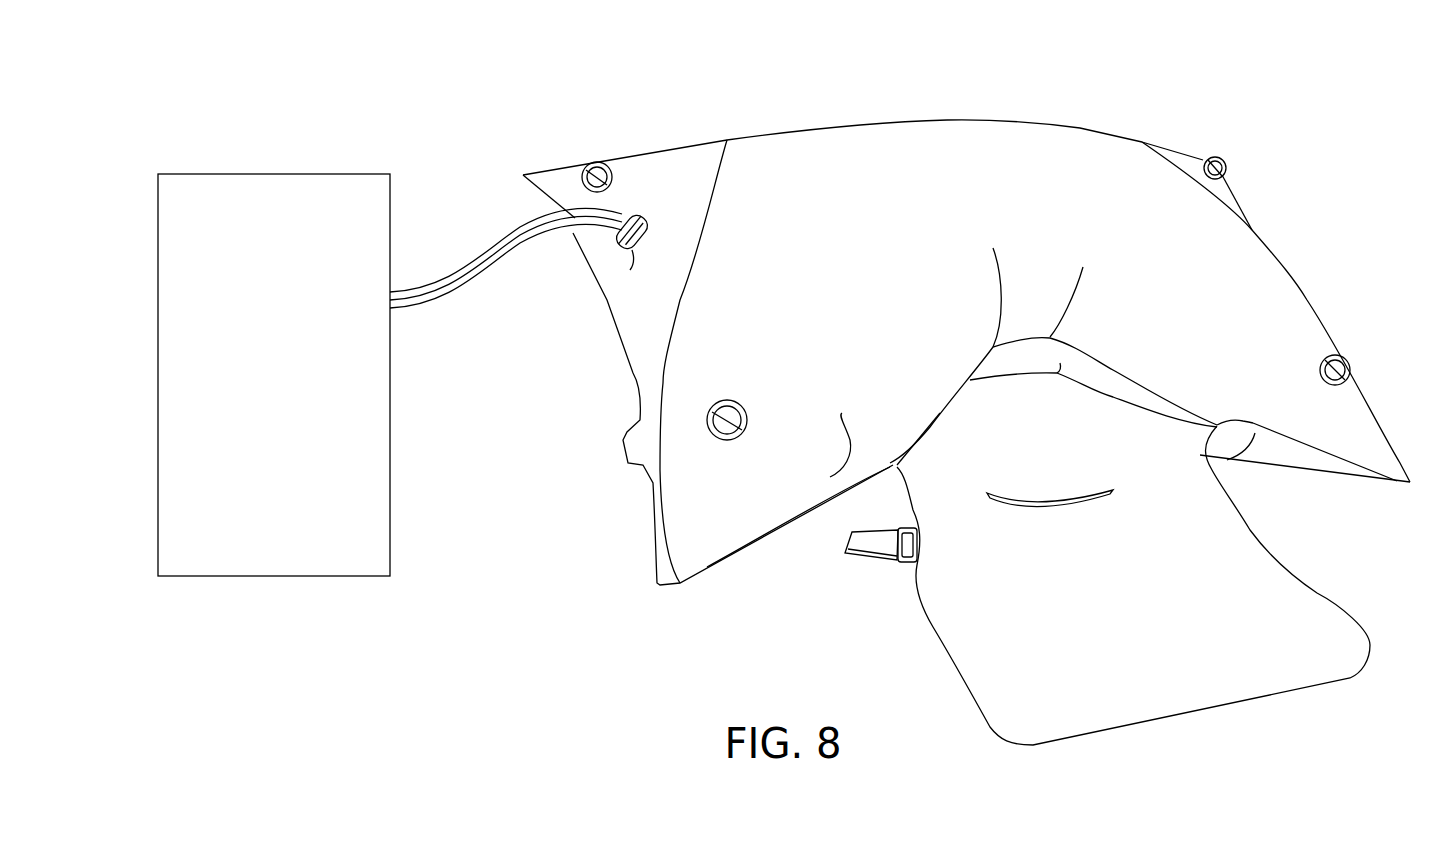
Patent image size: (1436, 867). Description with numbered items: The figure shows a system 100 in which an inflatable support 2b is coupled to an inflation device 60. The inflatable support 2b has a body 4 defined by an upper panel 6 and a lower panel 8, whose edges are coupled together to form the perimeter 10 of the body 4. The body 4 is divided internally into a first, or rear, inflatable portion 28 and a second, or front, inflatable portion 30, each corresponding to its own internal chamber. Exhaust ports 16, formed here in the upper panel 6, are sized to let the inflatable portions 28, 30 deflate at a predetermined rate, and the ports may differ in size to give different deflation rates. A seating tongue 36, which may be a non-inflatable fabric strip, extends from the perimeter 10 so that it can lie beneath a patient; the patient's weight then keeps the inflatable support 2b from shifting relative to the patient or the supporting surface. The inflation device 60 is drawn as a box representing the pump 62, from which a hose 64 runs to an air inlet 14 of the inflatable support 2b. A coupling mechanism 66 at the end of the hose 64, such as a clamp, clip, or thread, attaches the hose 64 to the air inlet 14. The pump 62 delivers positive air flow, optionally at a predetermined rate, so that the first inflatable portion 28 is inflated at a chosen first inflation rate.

The system 100 is at (966, 393).
The inflatable support 2b is at (1160, 115).
The body 4 is at (1080, 130).
The upper panel 6 is at (1275, 262).
The lower panel 8 is at (1295, 462).
The perimeter 10 is at (633, 375).
The air inlet 14 is at (632, 250).
The exhaust port 16 is at (583, 177).
The first inflatable portion 28 is at (687, 160).
The second inflatable portion 30 is at (916, 135).
The seating tongue 36 is at (1217, 685).
The inflation device 60 is at (404, 335).
The pump 62 is at (277, 173).
The hose 64 is at (505, 238).
The coupling mechanism 66 is at (632, 210).